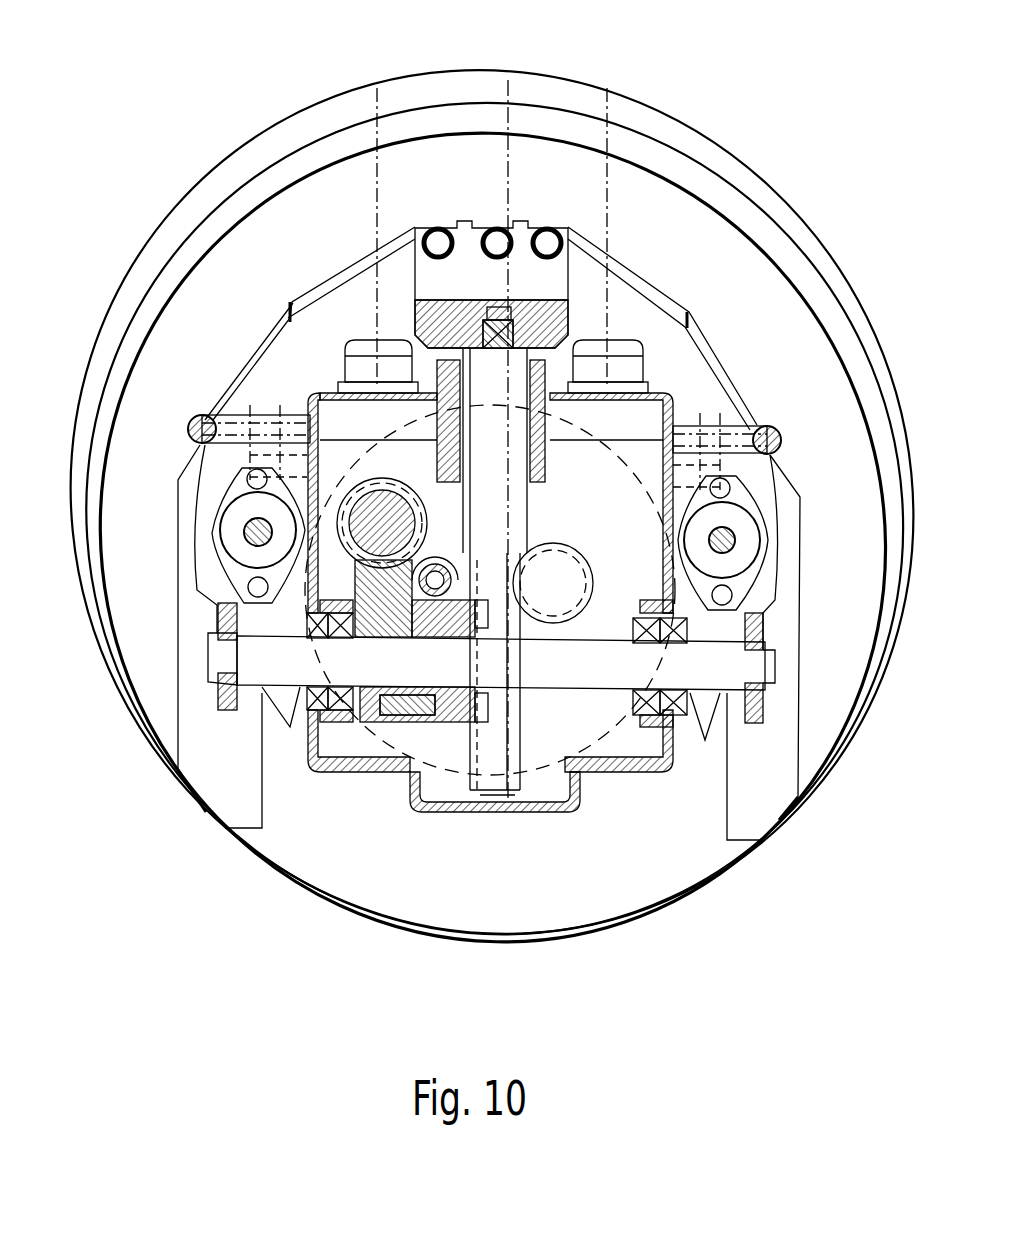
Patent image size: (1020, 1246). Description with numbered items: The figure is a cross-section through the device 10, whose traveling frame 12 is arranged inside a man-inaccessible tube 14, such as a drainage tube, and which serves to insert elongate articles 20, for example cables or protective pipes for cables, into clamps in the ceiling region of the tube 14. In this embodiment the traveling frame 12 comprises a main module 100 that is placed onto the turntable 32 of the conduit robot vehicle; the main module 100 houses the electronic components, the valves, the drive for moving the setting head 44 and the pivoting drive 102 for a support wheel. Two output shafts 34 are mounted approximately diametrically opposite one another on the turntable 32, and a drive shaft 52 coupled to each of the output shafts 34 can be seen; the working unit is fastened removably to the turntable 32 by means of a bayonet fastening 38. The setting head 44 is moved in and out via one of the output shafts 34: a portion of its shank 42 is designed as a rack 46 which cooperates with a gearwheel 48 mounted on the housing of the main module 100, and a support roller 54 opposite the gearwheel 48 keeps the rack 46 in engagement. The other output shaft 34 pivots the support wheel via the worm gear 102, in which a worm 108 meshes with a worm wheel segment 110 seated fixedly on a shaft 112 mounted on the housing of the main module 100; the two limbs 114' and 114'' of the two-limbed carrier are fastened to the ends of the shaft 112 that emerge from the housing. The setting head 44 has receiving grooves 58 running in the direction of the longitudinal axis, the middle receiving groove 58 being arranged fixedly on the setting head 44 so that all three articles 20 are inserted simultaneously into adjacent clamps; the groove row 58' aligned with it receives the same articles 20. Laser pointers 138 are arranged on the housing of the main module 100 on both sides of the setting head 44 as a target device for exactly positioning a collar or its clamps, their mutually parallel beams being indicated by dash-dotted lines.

The device 10 is at (330, 243).
The traveling frame 12 is at (305, 288).
The tube 14 is at (637, 160).
The elongate articles 20 is at (432, 238).
The turntable 32 is at (716, 394).
The output shafts 34 is at (250, 510).
The bayonet fastening 38 is at (778, 456).
The shank 42 is at (503, 350).
The setting head 44 is at (397, 273).
The rack 46 is at (540, 812).
The gearwheel 48 is at (567, 580).
The drive shaft 52 is at (244, 528).
The support roller 54 is at (440, 558).
The receiving grooves 58 is at (492, 204).
The terminal lead 58' is at (491, 175).
The main module 100 is at (674, 390).
The worm gear 102 is at (243, 575).
The worm 108 is at (372, 480).
The worm wheel segment 110 is at (378, 754).
The shaft 112 is at (250, 660).
The limb 114' is at (831, 682).
The limb 114'' is at (158, 677).
The laser pointers 138 is at (350, 356).